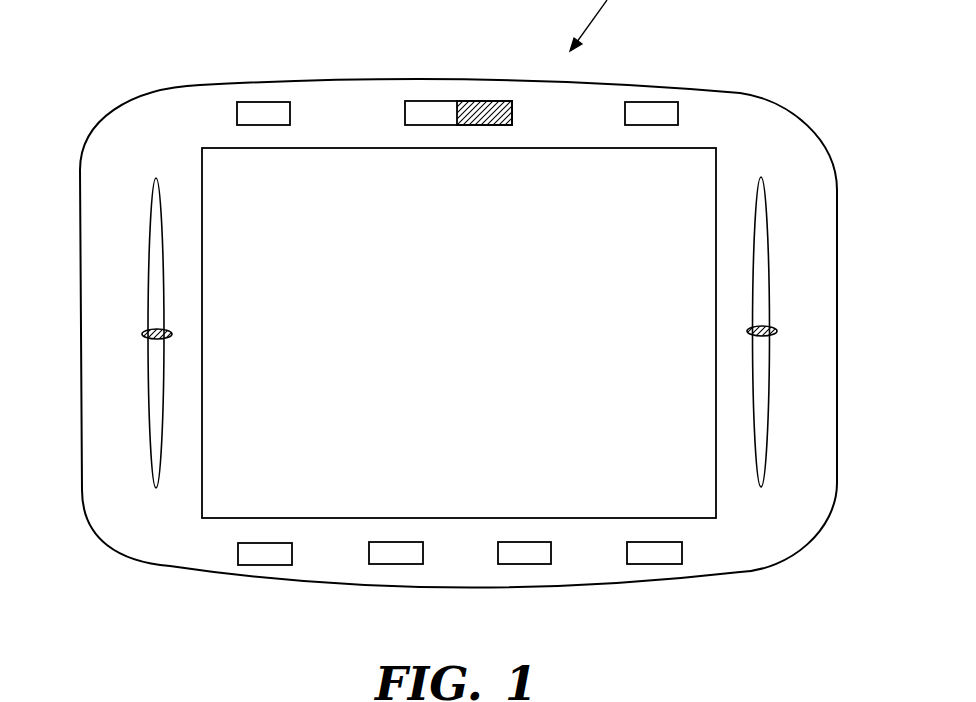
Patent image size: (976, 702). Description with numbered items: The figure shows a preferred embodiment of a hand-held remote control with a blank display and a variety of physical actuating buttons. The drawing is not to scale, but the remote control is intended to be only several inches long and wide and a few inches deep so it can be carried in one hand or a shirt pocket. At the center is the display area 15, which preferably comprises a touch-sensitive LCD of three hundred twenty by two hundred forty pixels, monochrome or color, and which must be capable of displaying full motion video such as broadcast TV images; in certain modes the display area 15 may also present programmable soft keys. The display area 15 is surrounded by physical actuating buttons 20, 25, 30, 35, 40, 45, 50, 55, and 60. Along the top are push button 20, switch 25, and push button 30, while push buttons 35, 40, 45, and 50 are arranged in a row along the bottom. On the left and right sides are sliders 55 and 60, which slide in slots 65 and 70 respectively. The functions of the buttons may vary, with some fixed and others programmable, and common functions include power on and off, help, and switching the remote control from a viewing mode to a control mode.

The display area 15 is at (475, 470).
The physical actuating button 20 is at (268, 102).
The physical actuating button 25 is at (432, 101).
The physical actuating button 30 is at (652, 102).
The physical actuating button 35 is at (270, 565).
The physical actuating button 40 is at (393, 564).
The physical actuating button 45 is at (522, 564).
The physical actuating button 50 is at (655, 564).
The slider 55 is at (143, 331).
The slider 60 is at (776, 328).
The slot 65 is at (148, 380).
The slot 70 is at (769, 384).